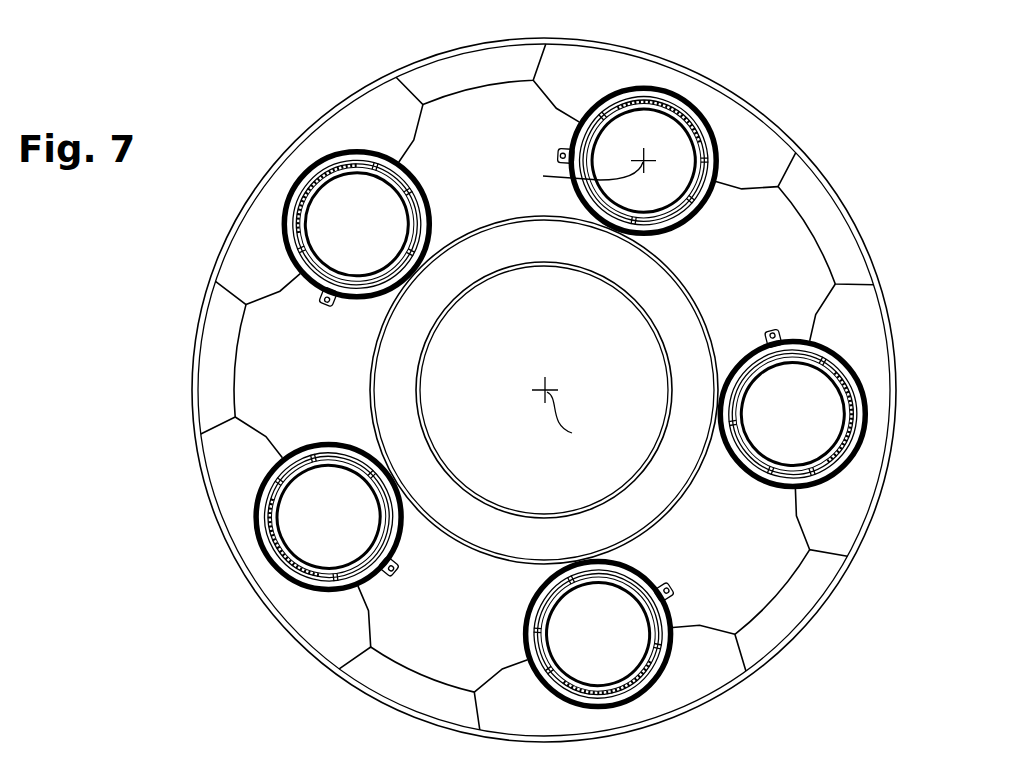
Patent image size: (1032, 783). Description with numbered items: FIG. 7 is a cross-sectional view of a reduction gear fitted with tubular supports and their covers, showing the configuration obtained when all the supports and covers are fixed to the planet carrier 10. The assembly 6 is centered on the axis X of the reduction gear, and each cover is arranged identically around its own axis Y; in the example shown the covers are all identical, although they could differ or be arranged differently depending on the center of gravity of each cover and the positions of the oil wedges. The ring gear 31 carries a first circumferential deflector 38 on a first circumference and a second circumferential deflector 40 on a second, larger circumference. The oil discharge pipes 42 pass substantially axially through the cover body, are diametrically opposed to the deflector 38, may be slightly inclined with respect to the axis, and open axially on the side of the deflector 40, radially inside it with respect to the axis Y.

The lens assembly / optical module 6 is at (858, 156).
The planet carrier 10 is at (797, 248).
The ring gear 31 is at (741, 139).
The first circumferential deflector 38 is at (563, 132).
The second circumferential deflector 40 is at (708, 117).
The oil discharge pipes 42 is at (670, 102).